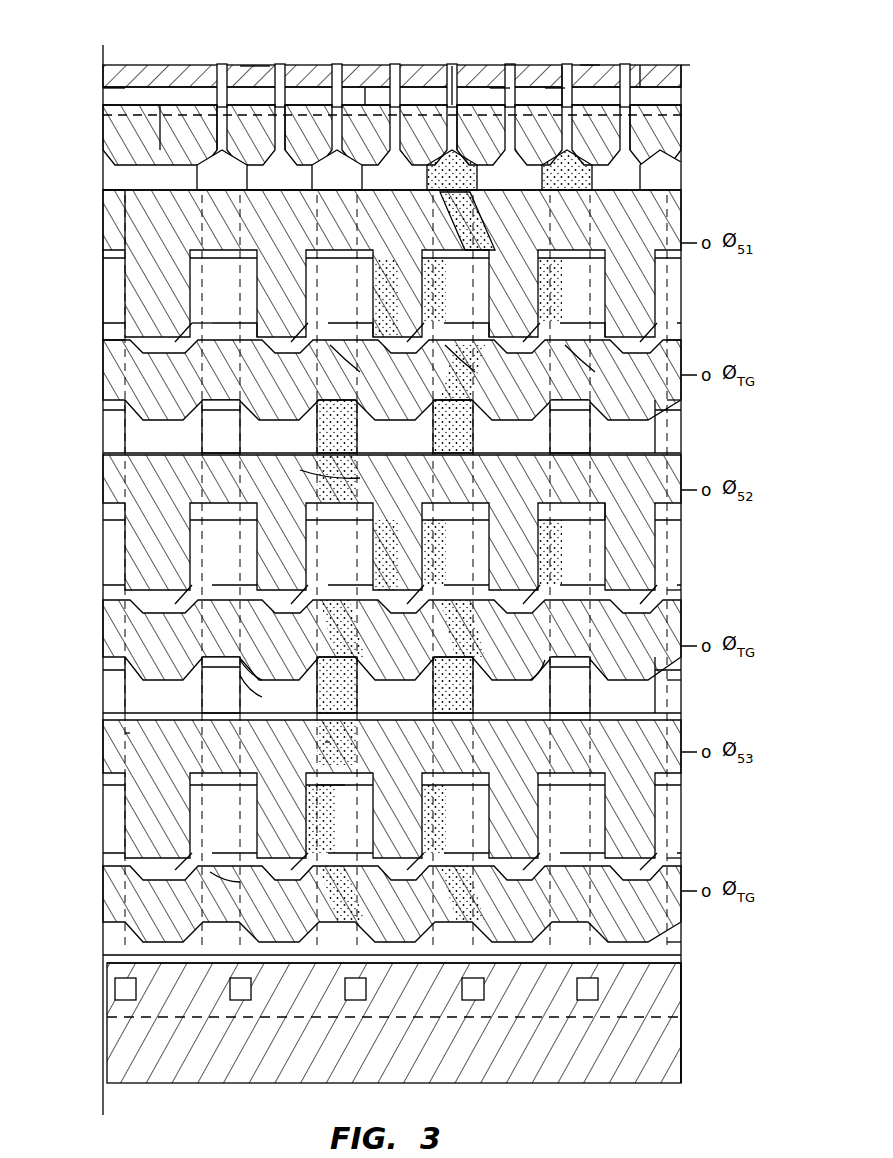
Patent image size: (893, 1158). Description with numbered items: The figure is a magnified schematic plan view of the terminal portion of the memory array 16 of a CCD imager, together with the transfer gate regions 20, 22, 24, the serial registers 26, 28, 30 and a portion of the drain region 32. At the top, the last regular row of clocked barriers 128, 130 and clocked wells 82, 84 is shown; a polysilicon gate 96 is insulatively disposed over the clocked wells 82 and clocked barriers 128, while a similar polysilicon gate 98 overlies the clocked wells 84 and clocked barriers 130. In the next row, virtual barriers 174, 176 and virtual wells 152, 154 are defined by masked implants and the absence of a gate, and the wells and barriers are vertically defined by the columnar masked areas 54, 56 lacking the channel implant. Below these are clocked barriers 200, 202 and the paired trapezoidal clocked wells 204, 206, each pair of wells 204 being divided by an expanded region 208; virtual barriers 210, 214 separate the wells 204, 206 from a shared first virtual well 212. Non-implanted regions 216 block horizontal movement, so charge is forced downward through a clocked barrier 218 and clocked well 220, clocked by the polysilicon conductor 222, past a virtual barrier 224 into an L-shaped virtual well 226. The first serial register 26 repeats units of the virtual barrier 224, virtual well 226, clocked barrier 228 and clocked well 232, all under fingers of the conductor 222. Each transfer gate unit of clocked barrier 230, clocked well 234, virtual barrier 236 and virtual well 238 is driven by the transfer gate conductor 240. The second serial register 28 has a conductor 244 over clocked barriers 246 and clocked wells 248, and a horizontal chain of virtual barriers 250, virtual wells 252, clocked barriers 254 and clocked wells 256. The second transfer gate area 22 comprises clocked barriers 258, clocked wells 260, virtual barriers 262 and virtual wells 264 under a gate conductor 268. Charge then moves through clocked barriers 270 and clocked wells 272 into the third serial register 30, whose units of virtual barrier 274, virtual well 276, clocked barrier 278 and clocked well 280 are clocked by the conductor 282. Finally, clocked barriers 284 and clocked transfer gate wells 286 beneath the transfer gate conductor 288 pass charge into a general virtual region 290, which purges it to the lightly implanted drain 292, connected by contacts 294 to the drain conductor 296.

The memory array 16 is at (715, 40).
The first transfer gate region 20 is at (714, 434).
The second transfer gate region 22 is at (706, 697).
The third transfer gate region 24 is at (700, 926).
The first serial register 26 is at (706, 347).
The second serial register 28 is at (706, 587).
The third serial register 30 is at (706, 820).
The drain region 32 is at (690, 968).
The columnar masked area 54 is at (455, 68).
The columnar masked area 56 is at (548, 68).
The clocked well 82 is at (500, 83).
The clocked well 84 is at (435, 78).
The polysilicon gate 96 is at (645, 70).
The polysilicon gate 98 is at (258, 75).
The clocked barrier 128 is at (588, 63).
The clocked barrier 130 is at (555, 80).
The virtual well 152 is at (513, 63).
The virtual well 154 is at (420, 63).
The virtual barrier 174 is at (681, 96).
The virtual barrier 176 is at (372, 95).
The clocked barrier 200 is at (655, 65).
The clocked barrier 202 is at (120, 145).
The clocked well 204 is at (354, 136).
The clocked well 206 is at (462, 88).
The expanded region 208 is at (163, 125).
The virtual barrier 210 is at (337, 128).
The first virtual well 212 is at (210, 186).
The virtual barrier 214 is at (217, 148).
The non-implanted region 216 is at (155, 234).
The clocked barrier 218 is at (245, 188).
The clocked well 220 is at (472, 198).
The polysilicon conductor 222 is at (115, 218).
The virtual barrier 224 is at (227, 322).
The L-shaped virtual well 226 is at (196, 300).
The clocked barrier 228 is at (196, 262).
The clocked barrier 230 is at (258, 362).
The clocked well 232 is at (269, 302).
The clocked well 234 is at (322, 387).
The virtual barrier 236 is at (470, 400).
The virtual well 238 is at (120, 440).
The transfer gate conductor 240 is at (115, 378).
The conductor 244 is at (115, 488).
The clocked barrier 246 is at (317, 448).
The clocked well 248 is at (360, 478).
The virtual barrier 250 is at (227, 562).
The virtual well 252 is at (196, 583).
The clocked barrier 254 is at (640, 524).
The clocked well 256 is at (196, 524).
The clocked barrier 258 is at (478, 598).
The clocked well 260 is at (245, 672).
The virtual barrier 262 is at (242, 695).
The virtual well 264 is at (120, 708).
The polysilicon gate conductor 268 is at (115, 623).
The clocked barrier 270 is at (125, 733).
The clocked well 272 is at (325, 742).
The virtual barrier 274 is at (227, 851).
The virtual well 276 is at (196, 818).
The clocked barrier 278 is at (318, 785).
The clocked well 280 is at (285, 798).
The polysilicon gate conductor 282 is at (115, 752).
The clocked barrier 284 is at (255, 878).
The clocked transfer gate well 286 is at (211, 905).
The transfer gate conductor 288 is at (115, 882).
The general virtual region 290 is at (115, 946).
The lightly implanted drain 292 is at (115, 1005).
The contact 294 is at (243, 1000).
The drain conductor 296 is at (115, 1058).